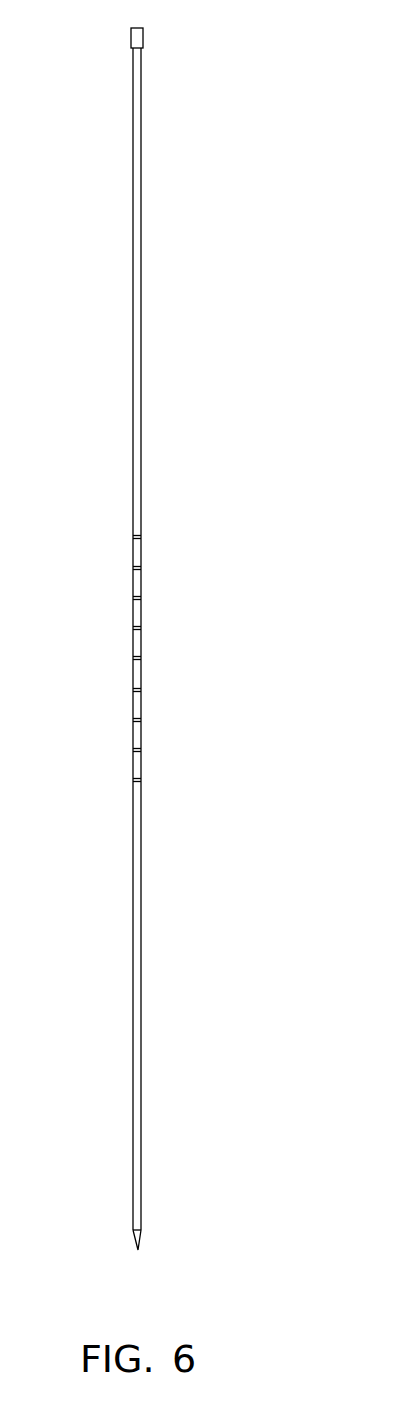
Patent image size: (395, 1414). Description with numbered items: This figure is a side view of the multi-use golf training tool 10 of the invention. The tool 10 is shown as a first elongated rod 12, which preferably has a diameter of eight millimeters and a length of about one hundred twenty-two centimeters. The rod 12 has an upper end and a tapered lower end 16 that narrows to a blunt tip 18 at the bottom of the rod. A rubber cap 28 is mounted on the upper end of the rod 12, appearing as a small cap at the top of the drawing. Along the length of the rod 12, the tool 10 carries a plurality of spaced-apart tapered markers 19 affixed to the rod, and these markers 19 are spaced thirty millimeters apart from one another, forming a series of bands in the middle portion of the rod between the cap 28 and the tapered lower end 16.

The multi-use golf training tool 10 is at (200, 138).
The first elongated rod 12 is at (142, 245).
The tapered lower end 16 is at (141, 1231).
The blunt tip 18 is at (138, 1250).
The spaced-apart tapered markers 19 is at (142, 627).
The rubber cap 28 is at (135, 28).